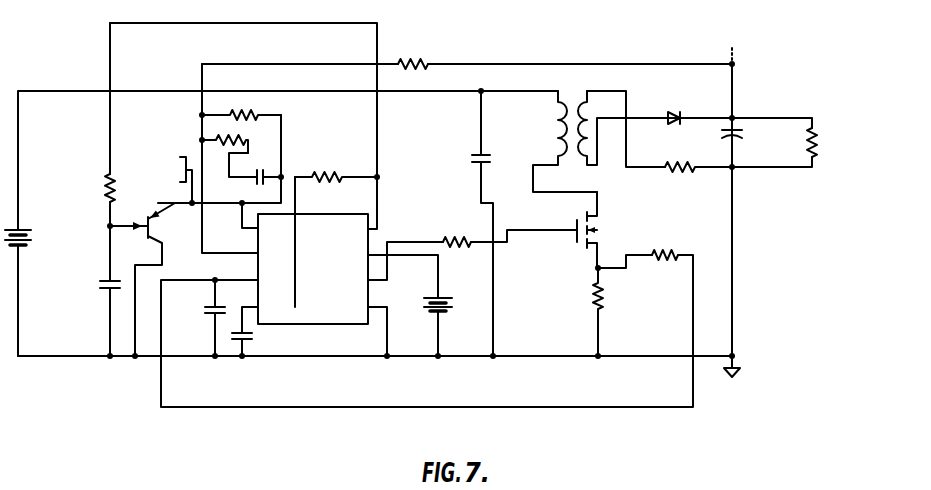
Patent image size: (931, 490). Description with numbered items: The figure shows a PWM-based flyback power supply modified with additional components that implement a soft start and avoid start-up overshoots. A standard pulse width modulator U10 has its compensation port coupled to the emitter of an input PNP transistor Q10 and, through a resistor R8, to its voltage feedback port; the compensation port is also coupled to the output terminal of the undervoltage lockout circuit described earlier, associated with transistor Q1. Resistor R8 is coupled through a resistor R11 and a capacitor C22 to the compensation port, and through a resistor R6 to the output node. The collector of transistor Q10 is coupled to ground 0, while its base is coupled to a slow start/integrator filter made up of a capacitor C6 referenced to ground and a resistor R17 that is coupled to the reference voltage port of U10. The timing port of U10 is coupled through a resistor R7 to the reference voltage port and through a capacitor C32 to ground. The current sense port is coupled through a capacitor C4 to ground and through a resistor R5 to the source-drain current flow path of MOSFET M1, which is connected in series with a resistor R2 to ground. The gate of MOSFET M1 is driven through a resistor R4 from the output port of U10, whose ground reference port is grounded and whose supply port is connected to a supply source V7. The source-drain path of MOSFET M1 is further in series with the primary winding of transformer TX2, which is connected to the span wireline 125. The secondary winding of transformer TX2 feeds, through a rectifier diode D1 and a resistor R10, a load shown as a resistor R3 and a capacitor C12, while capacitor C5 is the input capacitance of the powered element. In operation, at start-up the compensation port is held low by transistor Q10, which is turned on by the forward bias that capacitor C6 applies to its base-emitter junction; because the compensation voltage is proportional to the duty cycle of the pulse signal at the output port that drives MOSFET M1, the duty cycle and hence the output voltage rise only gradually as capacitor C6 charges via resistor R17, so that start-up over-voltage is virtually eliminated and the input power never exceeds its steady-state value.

The ground 0 is at (741, 385).
The span wireline 125 is at (34, 238).
The resistor R17 is at (91, 190).
The transistor Q1 is at (153, 150).
The input PNP transistor Q10 is at (142, 267).
The capacitor C6 is at (96, 273).
The resistor R8 is at (241, 104).
The resistor R11 is at (210, 133).
The capacitor C22 is at (255, 164).
The resistor R7 is at (336, 162).
The pulse width modulator U10 is at (313, 254).
The capacitor C4 is at (202, 318).
The capacitor C32 is at (262, 331).
The resistor R4 is at (457, 224).
The VCC supply V7 is at (447, 286).
The capacitor C5 is at (470, 223).
The resistor R6 is at (414, 50).
The transformer TX2 is at (600, 143).
The MOSFET M1 is at (575, 230).
The rectifier diode D1 is at (700, 104).
The resistor R10 is at (698, 153).
The capacitor C12 is at (750, 136).
The load resistor R3 is at (800, 147).
The resistor R5 is at (665, 240).
The resistor R2 is at (583, 312).